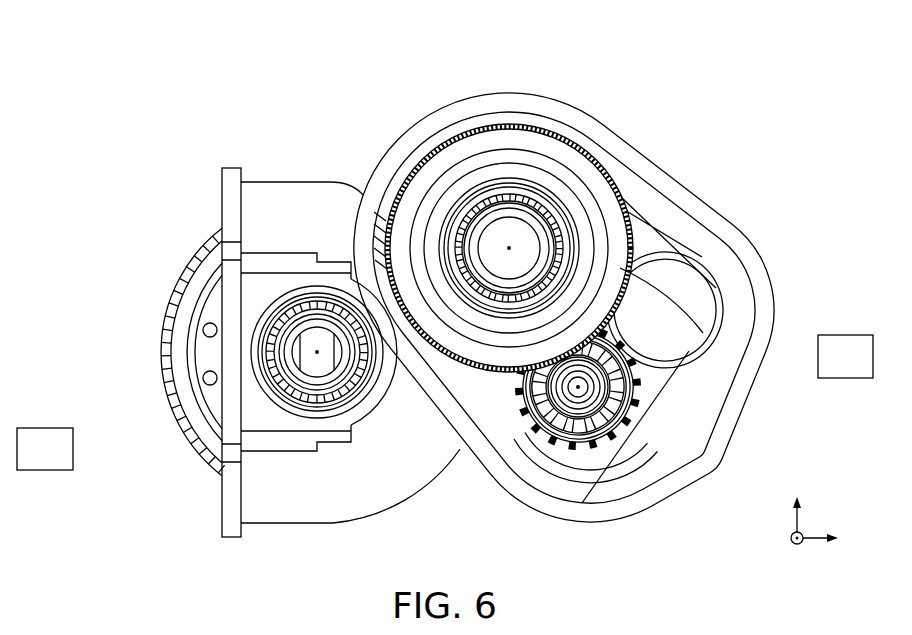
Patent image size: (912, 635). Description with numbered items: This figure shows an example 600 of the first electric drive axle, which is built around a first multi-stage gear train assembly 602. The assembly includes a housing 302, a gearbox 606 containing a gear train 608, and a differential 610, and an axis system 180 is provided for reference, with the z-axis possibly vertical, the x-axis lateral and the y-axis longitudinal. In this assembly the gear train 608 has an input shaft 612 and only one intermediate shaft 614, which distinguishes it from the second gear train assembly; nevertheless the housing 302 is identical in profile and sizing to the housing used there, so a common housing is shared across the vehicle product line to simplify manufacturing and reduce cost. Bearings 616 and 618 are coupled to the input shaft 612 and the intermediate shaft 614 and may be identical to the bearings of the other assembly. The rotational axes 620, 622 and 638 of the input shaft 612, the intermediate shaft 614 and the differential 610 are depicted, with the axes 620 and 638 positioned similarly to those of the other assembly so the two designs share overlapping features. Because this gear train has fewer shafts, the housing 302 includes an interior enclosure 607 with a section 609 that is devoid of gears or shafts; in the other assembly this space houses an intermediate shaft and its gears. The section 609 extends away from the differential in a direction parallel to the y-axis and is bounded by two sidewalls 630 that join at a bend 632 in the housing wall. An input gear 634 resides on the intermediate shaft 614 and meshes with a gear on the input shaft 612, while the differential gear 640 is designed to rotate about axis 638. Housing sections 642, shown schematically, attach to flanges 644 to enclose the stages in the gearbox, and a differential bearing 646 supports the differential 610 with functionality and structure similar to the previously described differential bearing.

The axis system 180 is at (820, 516).
The housing 302 is at (478, 90).
The example of the first electric drive axle 600 is at (810, 92).
The first multi-stage gear train assembly 602 is at (802, 160).
The gearbox 606 is at (710, 152).
The interior enclosure 607 is at (623, 462).
The gear train 608 is at (650, 204).
The section 609 is at (700, 368).
The differential 610 is at (146, 208).
The input shaft 612 is at (567, 392).
The intermediate shaft 614 is at (528, 212).
The bearing 616 is at (610, 405).
The bearing 618 is at (500, 186).
The rotational axis 620 is at (578, 387).
The rotational axis 622 is at (509, 246).
The sidewalls 630 is at (617, 140).
The bend 632 is at (770, 263).
The input gear 634 is at (428, 155).
The rotational axis 638 is at (317, 352).
The differential gear 640 is at (163, 371).
The housing sections 642 is at (50, 470).
The flanges 644 is at (763, 307).
The differential bearing 646 is at (302, 407).